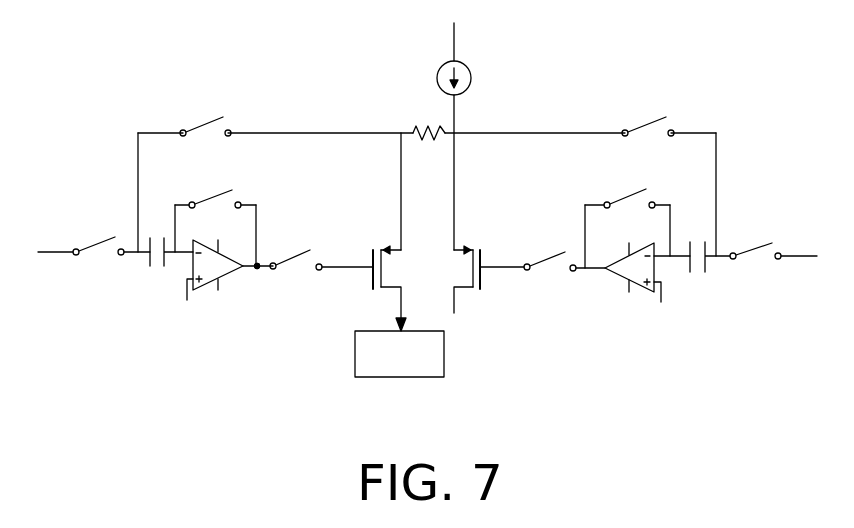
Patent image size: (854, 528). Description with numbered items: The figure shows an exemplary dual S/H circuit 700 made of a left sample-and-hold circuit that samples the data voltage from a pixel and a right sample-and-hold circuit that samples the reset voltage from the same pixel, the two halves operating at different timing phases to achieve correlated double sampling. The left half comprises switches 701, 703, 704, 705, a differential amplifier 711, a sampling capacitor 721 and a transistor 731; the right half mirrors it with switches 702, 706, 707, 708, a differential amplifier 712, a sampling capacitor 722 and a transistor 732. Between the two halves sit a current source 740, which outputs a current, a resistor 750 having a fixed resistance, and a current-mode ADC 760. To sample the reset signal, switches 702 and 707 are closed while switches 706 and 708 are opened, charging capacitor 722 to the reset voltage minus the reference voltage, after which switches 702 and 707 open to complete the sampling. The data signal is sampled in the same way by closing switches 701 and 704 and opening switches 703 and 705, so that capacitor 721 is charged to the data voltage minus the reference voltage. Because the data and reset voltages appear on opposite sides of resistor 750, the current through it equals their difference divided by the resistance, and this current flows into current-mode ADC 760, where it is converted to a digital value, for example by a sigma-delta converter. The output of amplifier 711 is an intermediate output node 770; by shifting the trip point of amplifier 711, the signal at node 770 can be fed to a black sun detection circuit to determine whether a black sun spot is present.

The dual S/H circuit 700 is at (435, 213).
The switch 701 is at (100, 240).
The switch 702 is at (747, 248).
The switch 703 is at (213, 118).
The switch 704 is at (222, 190).
The switch 705 is at (308, 250).
The switch 706 is at (634, 129).
The switch 707 is at (617, 200).
The switch 708 is at (552, 255).
The differential amplifier 711 is at (225, 278).
The differential amplifier 712 is at (621, 280).
The sampling capacitor 721 is at (155, 268).
The sampling capacitor 722 is at (694, 273).
The transistor 731 is at (370, 280).
The transistor 732 is at (483, 280).
The current source 740 is at (465, 136).
The resistor 750 is at (413, 127).
The current-mode ADC 760 is at (352, 368).
The intermediate output node 770 is at (257, 266).